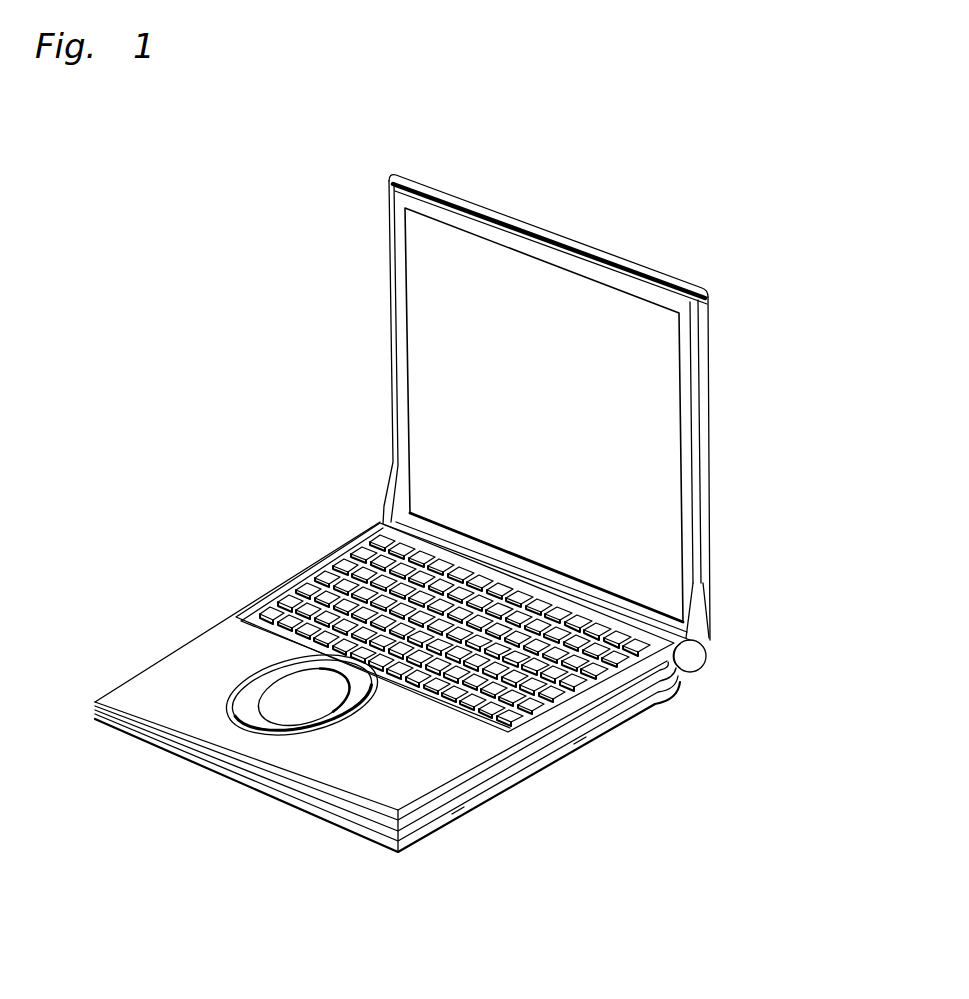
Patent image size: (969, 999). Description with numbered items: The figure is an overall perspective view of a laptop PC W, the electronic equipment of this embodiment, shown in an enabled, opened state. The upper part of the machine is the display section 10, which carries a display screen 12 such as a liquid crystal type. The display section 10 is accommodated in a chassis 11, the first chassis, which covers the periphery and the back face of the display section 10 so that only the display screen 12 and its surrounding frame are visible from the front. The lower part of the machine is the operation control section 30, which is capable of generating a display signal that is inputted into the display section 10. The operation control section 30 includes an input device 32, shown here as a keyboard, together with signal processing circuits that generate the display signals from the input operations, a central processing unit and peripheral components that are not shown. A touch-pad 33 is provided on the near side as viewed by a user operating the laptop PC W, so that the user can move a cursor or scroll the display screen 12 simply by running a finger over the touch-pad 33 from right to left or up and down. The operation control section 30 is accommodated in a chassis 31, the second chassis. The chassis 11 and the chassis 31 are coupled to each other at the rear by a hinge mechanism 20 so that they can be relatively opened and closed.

The display section 10 is at (392, 270).
The chassis (first chassis) 11 is at (691, 412).
The display screen 12 is at (428, 349).
The laptop PC W is at (718, 337).
The hinge mechanism 20 is at (706, 666).
The operation control section 30 is at (193, 627).
The chassis (second chassis) 31 is at (488, 772).
The input device 32 is at (326, 581).
The touch-pad 33 is at (270, 708).